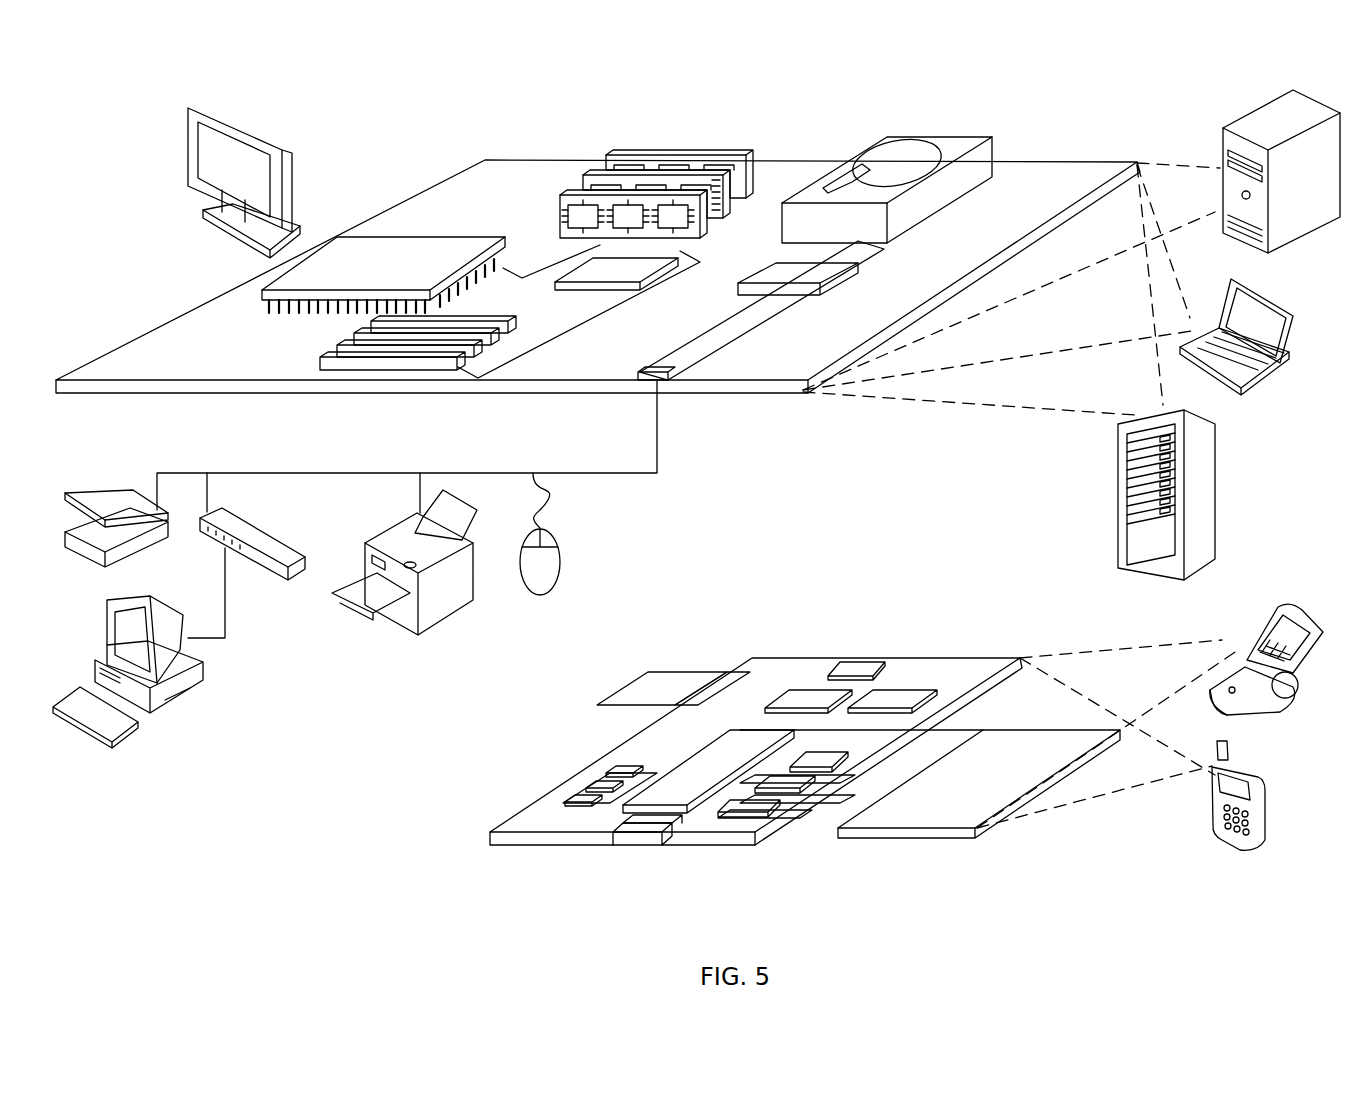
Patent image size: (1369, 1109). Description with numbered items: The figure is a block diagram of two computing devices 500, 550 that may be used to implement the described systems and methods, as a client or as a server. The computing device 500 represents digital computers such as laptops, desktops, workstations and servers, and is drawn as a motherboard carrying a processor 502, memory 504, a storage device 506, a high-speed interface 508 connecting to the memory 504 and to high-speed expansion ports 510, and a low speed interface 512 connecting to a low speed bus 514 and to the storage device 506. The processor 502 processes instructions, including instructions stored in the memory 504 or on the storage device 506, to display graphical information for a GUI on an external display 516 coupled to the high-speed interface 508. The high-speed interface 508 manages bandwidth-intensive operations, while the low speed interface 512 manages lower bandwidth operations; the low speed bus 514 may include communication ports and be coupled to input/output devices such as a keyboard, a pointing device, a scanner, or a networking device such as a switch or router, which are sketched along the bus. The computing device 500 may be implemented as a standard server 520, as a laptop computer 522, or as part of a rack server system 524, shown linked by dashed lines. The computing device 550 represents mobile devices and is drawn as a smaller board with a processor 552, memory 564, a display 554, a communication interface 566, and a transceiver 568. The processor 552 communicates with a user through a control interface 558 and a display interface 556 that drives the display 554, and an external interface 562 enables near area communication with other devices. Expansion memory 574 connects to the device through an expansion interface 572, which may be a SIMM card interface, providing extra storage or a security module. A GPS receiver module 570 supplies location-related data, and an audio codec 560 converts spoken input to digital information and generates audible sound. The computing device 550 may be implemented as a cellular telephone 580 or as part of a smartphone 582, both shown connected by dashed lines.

The computing device 500 is at (403, 130).
The processor 502 is at (268, 290).
The memory 504 is at (625, 160).
The storage device 506 is at (875, 160).
The high-speed interface 508 is at (593, 270).
The high-speed expansion ports 510 is at (347, 350).
The low speed interface 512 is at (781, 274).
The low speed bus 514 is at (668, 382).
The display 516 is at (190, 108).
The standard server 520 is at (1224, 146).
The laptop computer 522 is at (1290, 315).
The rack server system 524 is at (1120, 512).
The computing device 550 is at (462, 845).
The processor 552 is at (680, 797).
The display 554 is at (935, 816).
The display interface 556 is at (753, 813).
The control interface 558 is at (790, 782).
The audio codec 560 is at (822, 758).
The external interface 562 is at (642, 833).
The memory 564 is at (573, 790).
The communication interface 566 is at (808, 695).
The transceiver 568 is at (895, 697).
The GPS receiver module 570 is at (865, 665).
The expansion interface 572 is at (735, 668).
The expansion memory 574 is at (647, 672).
The cellular telephone 580 is at (1268, 610).
The smartphone 582 is at (1205, 802).